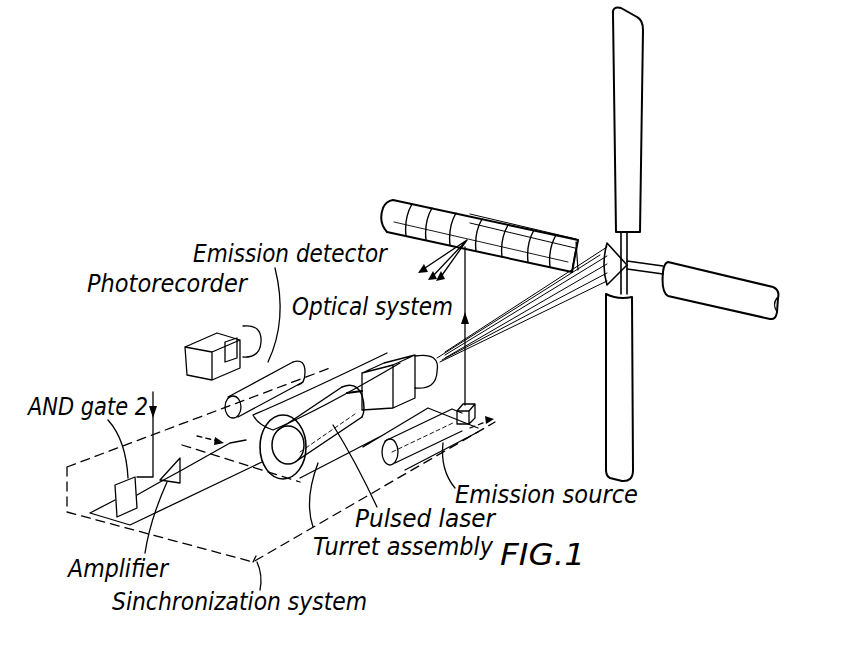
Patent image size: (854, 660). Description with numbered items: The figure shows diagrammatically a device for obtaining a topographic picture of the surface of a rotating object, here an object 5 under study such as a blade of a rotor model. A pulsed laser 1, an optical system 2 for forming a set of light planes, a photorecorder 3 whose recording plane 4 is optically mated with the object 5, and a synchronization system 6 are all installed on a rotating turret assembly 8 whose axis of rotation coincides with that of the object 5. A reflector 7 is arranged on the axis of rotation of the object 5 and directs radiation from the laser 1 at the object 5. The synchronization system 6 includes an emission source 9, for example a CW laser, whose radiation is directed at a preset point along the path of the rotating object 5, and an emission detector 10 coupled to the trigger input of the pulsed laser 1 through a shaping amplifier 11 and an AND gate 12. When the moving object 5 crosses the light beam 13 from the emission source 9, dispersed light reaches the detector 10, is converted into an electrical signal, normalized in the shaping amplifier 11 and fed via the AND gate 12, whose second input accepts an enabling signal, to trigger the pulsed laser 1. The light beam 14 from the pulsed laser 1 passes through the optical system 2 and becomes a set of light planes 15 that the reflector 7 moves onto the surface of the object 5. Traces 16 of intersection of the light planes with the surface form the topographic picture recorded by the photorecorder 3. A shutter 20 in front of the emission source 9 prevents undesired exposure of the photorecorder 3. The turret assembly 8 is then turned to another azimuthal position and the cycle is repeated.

The pulsed laser 1 is at (272, 447).
The optical system 2 is at (395, 370).
The photorecorder 3 is at (206, 337).
The recording plane 4 is at (187, 362).
The object under study 5 is at (610, 137).
The synchronization system 6 is at (279, 532).
The reflector 7 is at (627, 265).
The turret assembly 8 is at (316, 462).
The emission source 9 is at (412, 442).
The emission detector 10 is at (227, 406).
The shaping amplifier 11 is at (176, 462).
The AND gate 12 is at (116, 486).
The light beam 13 is at (466, 289).
The light beam 14 is at (368, 375).
The light planes 15 is at (548, 303).
The traces 16 is at (513, 227).
The shutter 20 is at (472, 406).